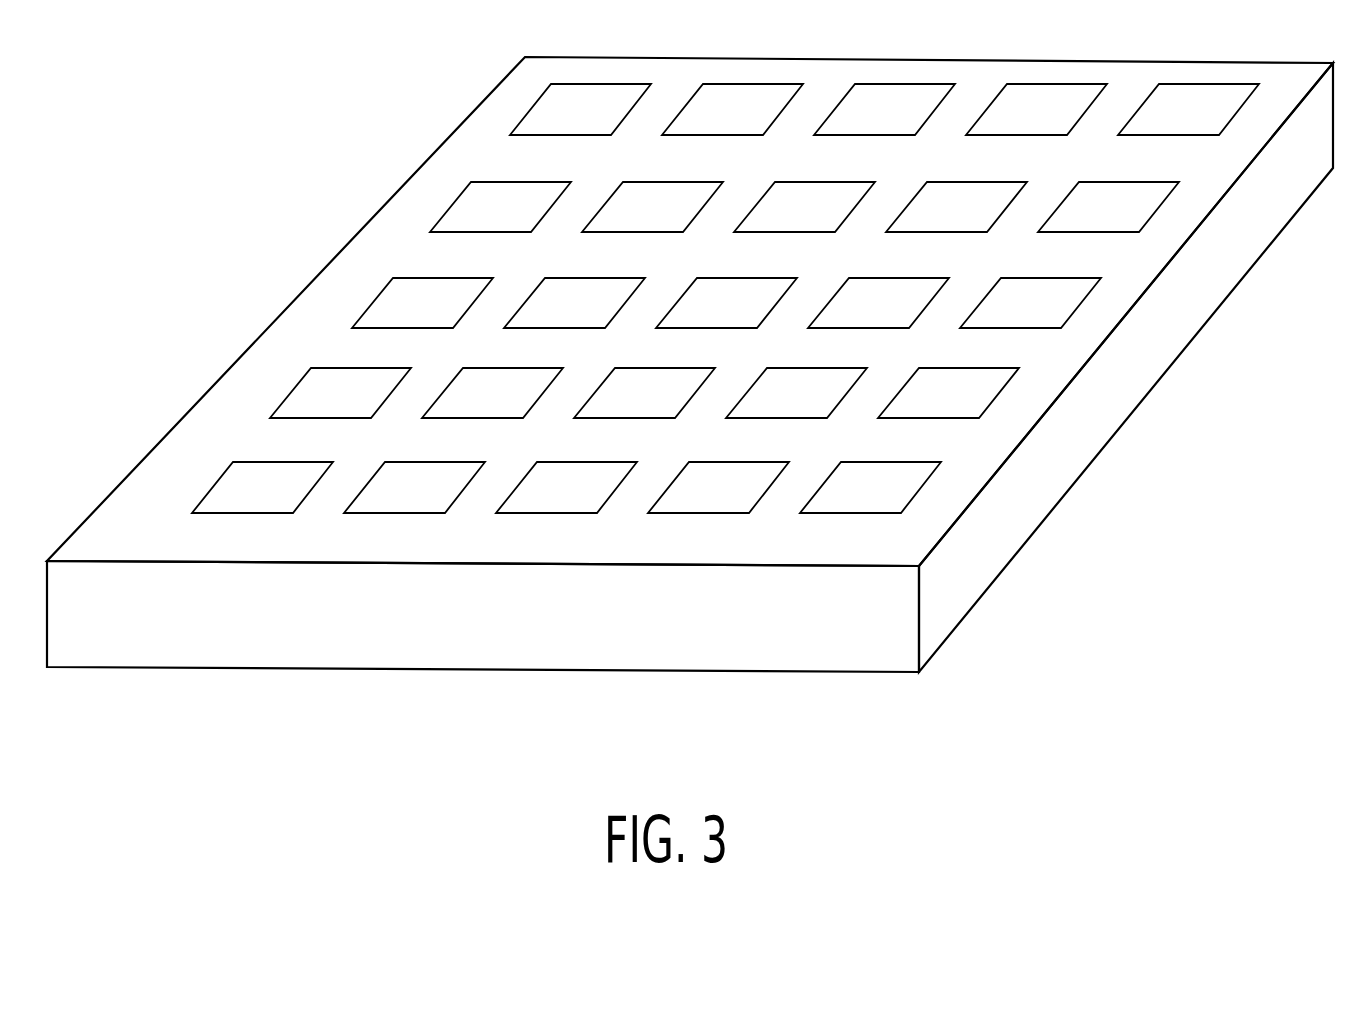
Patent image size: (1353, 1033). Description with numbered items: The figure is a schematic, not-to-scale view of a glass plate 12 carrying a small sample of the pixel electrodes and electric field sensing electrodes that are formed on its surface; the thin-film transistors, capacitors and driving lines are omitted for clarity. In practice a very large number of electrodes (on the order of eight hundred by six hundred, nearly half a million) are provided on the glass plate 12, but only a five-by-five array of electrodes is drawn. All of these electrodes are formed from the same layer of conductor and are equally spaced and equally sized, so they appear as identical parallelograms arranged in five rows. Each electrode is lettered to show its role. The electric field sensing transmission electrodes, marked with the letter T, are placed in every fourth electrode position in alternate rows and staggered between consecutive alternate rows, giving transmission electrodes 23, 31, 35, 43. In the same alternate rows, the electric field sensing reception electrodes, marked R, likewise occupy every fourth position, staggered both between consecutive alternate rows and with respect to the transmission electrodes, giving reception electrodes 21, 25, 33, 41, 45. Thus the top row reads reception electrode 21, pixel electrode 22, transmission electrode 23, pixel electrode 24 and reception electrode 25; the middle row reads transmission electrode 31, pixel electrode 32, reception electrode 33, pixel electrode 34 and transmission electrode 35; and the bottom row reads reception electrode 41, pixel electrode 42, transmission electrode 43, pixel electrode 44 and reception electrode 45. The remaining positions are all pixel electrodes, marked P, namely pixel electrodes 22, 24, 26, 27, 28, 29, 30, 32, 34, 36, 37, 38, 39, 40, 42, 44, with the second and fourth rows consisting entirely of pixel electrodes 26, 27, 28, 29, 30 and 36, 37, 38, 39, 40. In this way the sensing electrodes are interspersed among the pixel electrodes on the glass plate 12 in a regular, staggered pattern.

The glass plate 12 is at (859, 650).
The electric field sensing reception electrode 21 is at (565, 128).
The pixel electrode 22 is at (717, 128).
The electric field sensing transmission electrode 23 is at (869, 128).
The pixel electrode 24 is at (1021, 128).
The electric field sensing reception electrode 25 is at (1173, 128).
The pixel electrode 26 is at (485, 225).
The pixel electrode 27 is at (637, 225).
The pixel electrode 28 is at (789, 225).
The pixel electrode 29 is at (941, 225).
The pixel electrode 30 is at (1093, 225).
The electric field sensing transmission electrode 31 is at (407, 321).
The pixel electrode 32 is at (559, 321).
The electric field sensing reception electrode 33 is at (711, 321).
The pixel electrode 34 is at (863, 321).
The electric field sensing transmission electrode 35 is at (1015, 321).
The pixel electrode 36 is at (325, 411).
The pixel electrode 37 is at (477, 411).
The pixel electrode 38 is at (629, 411).
The pixel electrode 39 is at (781, 411).
The pixel electrode 40 is at (933, 411).
The electric field sensing reception electrode 41 is at (247, 506).
The pixel electrode 42 is at (399, 506).
The electric field sensing transmission electrode 43 is at (551, 506).
The pixel electrode 44 is at (703, 506).
The electric field sensing reception electrode 45 is at (855, 506).